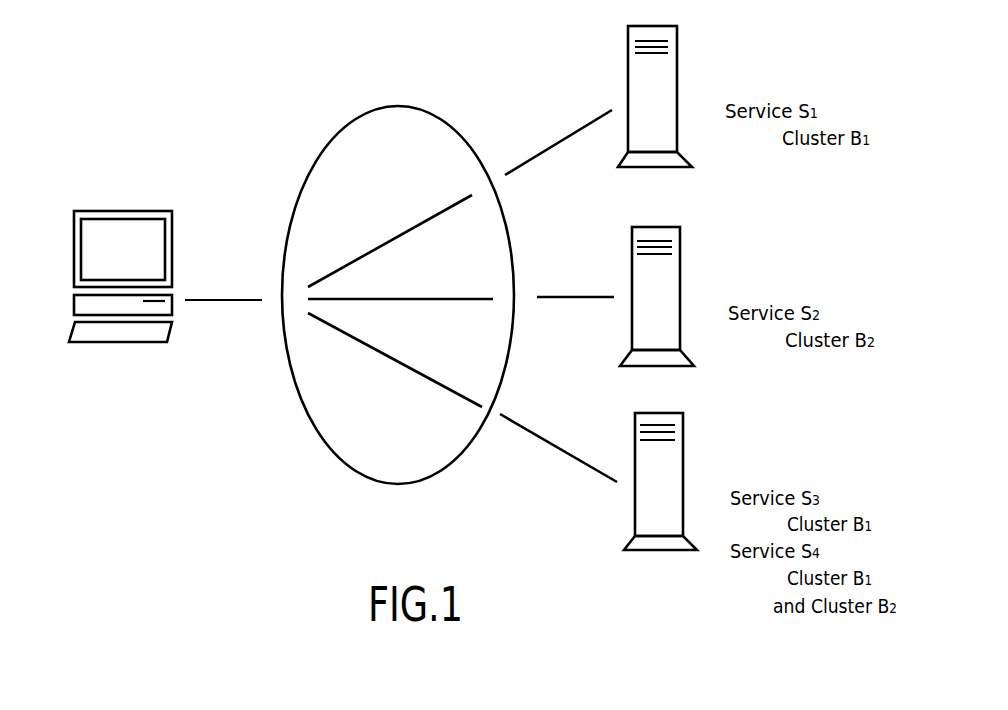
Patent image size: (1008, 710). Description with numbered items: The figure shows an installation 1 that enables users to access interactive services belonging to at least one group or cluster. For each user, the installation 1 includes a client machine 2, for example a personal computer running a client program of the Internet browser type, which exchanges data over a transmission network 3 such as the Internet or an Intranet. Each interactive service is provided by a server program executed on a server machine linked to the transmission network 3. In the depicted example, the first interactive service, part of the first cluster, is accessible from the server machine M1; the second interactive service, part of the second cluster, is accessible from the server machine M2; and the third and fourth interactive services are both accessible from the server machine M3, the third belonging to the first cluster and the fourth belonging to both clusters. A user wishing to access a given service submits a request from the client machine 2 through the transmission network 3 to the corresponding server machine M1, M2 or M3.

The installation 1 is at (315, 506).
The client machine 2 is at (136, 349).
The transmission network 3 is at (350, 118).
The server machine M1 is at (700, 47).
The server machine M2 is at (702, 248).
The server machine M3 is at (707, 434).